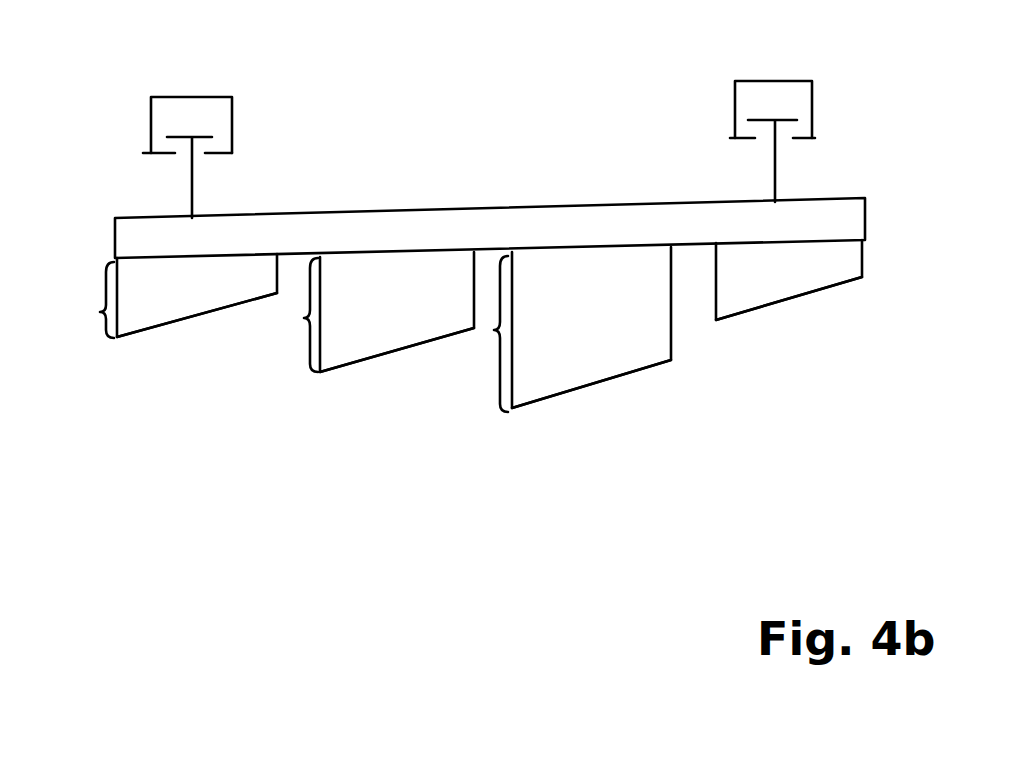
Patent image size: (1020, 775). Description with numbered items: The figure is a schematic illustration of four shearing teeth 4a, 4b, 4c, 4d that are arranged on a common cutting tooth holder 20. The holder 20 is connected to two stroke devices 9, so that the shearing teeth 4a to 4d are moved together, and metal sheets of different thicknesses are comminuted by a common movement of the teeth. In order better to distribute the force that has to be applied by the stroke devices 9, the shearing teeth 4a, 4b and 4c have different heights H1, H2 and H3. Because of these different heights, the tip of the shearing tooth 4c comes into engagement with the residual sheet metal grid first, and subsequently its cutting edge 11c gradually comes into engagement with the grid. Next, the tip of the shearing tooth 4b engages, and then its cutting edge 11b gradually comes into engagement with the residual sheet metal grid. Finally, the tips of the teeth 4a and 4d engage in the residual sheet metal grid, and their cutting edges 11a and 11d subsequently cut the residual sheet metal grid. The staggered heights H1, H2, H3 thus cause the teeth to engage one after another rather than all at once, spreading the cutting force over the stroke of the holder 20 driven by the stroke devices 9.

The stroke device 9 is at (204, 97).
The common cutting tooth holder 20 is at (430, 209).
The shearing tooth 4a is at (151, 315).
The shearing tooth 4b is at (363, 340).
The shearing tooth 4c is at (557, 383).
The shearing tooth 4d is at (753, 293).
The cutting edge 11a is at (203, 313).
The cutting edge 11b is at (410, 348).
The cutting edge 11c is at (614, 375).
The cutting edge 11d is at (818, 292).
The height of shearing tooth H1 is at (82, 304).
The height of shearing tooth H2 is at (293, 315).
The height of shearing tooth H3 is at (492, 334).